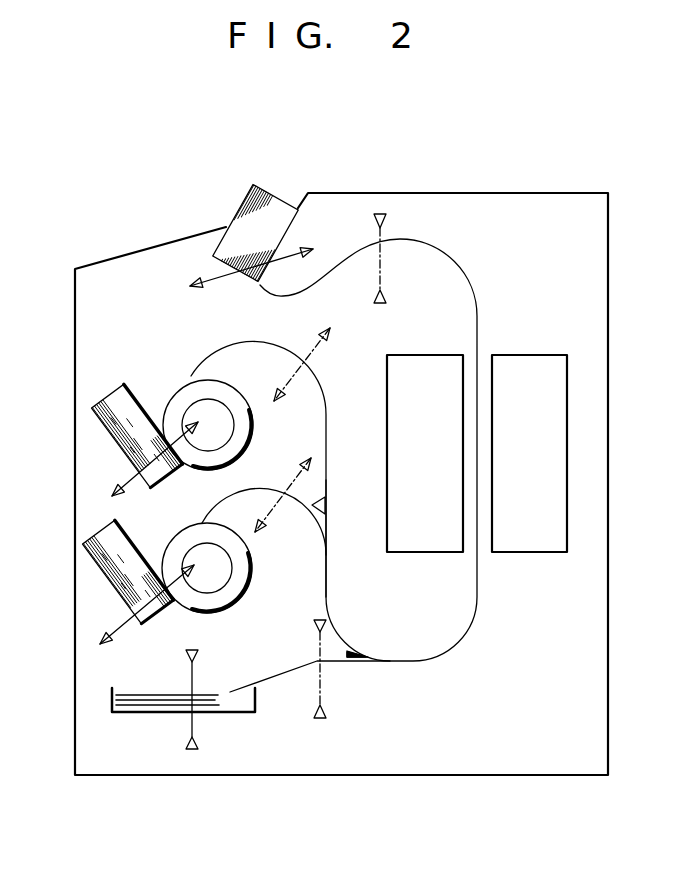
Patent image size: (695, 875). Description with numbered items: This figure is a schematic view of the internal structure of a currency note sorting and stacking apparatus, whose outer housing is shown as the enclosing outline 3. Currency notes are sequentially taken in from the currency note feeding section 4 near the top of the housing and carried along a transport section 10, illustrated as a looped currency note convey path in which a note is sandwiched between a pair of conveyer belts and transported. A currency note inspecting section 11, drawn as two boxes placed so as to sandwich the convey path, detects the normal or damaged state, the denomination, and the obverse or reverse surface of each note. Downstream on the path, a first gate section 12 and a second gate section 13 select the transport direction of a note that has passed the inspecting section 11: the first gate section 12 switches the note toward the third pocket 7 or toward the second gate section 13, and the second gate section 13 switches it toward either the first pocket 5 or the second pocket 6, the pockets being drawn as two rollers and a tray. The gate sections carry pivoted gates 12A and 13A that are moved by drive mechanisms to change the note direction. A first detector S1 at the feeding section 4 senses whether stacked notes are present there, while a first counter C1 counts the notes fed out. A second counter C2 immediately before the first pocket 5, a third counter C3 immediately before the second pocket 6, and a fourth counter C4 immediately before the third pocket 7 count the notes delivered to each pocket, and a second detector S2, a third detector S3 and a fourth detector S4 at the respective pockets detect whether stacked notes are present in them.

The housing 3 is at (489, 778).
The currency note feeding section 4 is at (213, 236).
The first pocket 5 is at (157, 406).
The second pocket 6 is at (172, 607).
The third pocket 7 is at (140, 716).
The transport section 10 is at (469, 622).
The currency note inspecting section 11 is at (440, 356).
The first gate section 12 is at (385, 670).
The gate 12A is at (352, 662).
The second gate section 13 is at (333, 538).
The gate 13A is at (326, 507).
The first detector S1 is at (312, 247).
The second detector S2 is at (110, 494).
The third detector S3 is at (98, 640).
The fourth detector S4 is at (197, 656).
The first counter C1 is at (388, 216).
The second counter C2 is at (338, 333).
The third counter C3 is at (306, 457).
The fourth counter C4 is at (317, 620).